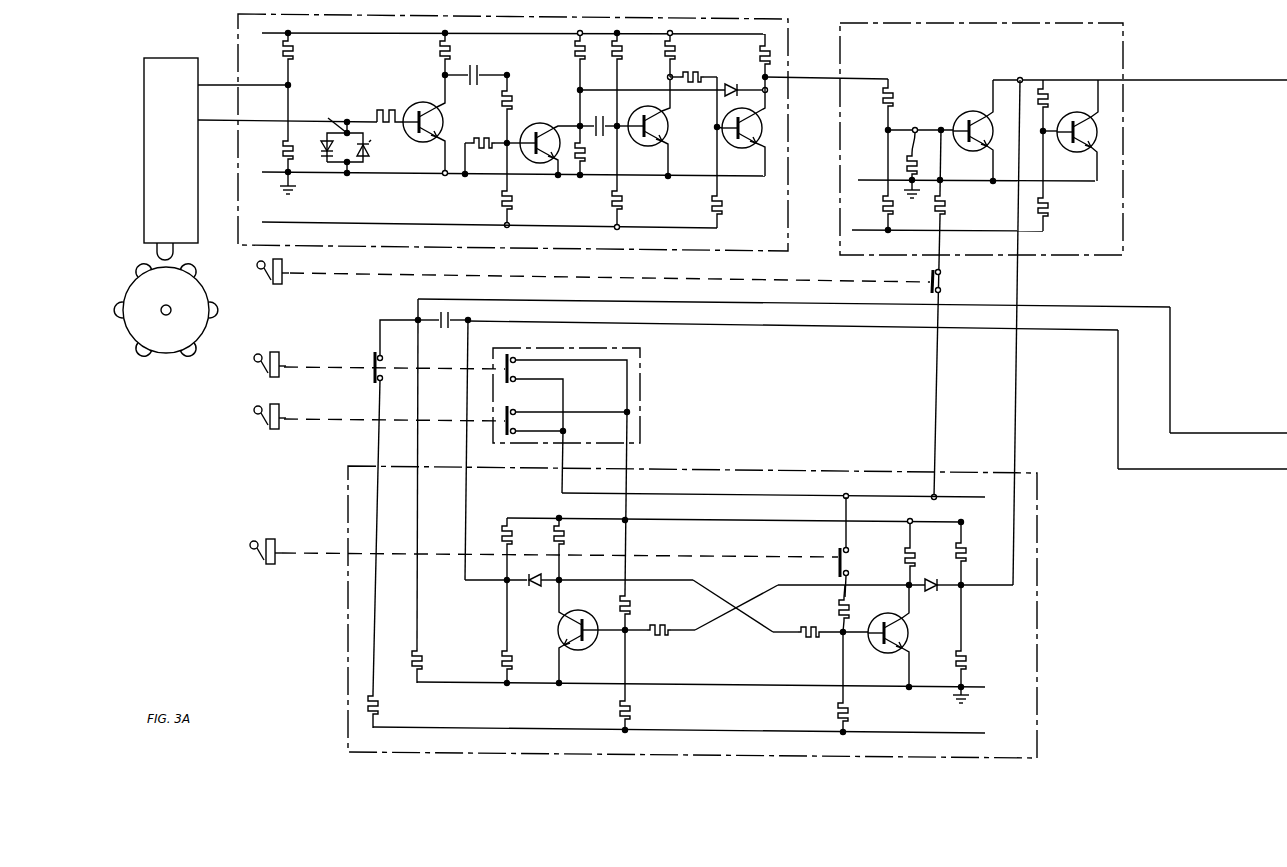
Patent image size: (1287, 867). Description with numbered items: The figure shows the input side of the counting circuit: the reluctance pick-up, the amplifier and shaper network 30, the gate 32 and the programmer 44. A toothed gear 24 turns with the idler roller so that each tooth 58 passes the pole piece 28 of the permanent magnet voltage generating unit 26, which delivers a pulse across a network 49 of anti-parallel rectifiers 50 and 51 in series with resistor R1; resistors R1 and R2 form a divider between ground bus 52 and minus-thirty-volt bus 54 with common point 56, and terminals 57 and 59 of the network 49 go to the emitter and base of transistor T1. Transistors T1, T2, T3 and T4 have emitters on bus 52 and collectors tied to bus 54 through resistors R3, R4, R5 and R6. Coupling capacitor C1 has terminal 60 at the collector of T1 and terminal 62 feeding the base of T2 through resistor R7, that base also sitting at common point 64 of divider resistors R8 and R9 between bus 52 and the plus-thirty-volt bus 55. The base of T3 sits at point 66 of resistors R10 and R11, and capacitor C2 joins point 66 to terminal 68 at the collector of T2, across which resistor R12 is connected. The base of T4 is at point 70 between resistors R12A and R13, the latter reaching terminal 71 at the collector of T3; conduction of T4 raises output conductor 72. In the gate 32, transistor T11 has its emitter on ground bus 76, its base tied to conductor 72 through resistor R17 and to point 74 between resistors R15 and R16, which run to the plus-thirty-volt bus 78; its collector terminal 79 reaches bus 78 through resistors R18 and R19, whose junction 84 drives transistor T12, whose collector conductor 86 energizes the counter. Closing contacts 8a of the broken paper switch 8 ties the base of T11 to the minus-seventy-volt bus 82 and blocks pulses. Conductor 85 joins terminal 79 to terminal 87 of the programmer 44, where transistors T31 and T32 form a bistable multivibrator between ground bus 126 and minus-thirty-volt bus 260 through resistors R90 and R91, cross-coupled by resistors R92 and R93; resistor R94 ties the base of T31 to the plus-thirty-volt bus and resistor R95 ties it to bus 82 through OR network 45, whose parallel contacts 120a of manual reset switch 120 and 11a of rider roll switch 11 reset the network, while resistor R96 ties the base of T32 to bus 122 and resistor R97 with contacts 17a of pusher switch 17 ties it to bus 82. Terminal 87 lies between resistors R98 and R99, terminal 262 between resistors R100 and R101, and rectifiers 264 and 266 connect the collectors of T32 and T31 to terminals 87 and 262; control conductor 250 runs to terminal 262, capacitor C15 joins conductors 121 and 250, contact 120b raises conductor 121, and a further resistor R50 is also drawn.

The amplifier and shaper network 30 is at (238, 20).
The permanent magnet voltage generating unit 26 is at (144, 192).
The pick-up pole piece 28 is at (157, 249).
The toothed gear 24 is at (160, 353).
The tooth 58 is at (213, 313).
The minus thirty volt bus 54 is at (345, 33).
The plus thirty volt bus 55 is at (312, 223).
The common point 56 is at (292, 86).
The network terminal 57 is at (345, 163).
The network terminal 59 is at (287, 119).
The rectifier 50 is at (321, 144).
The rectifier 51 is at (366, 143).
The network 49 is at (357, 154).
The ground potential bus 52 is at (396, 177).
The capacitor terminal 60 is at (443, 75).
The capacitor terminal 62 is at (497, 75).
The common point 64 is at (504, 140).
The common point 66 is at (618, 132).
The terminal 68 is at (578, 126).
The common point 70 is at (714, 131).
The terminal 71 is at (666, 78).
The output conductor 72 is at (823, 76).
The gate 32 is at (1123, 40).
The common point 74 is at (885, 130).
The ground potential bus 76 is at (958, 182).
The plus thirty volt bus 78 is at (993, 230).
The terminal 79 is at (1020, 77).
The terminal 84 is at (1043, 133).
The conductor 85 is at (1016, 243).
The conductor 86 is at (1195, 80).
The broken paper switch 8 is at (262, 273).
The contacts 8a is at (941, 287).
The manual reset switch 120 is at (256, 364).
The contacts 120a is at (514, 362).
The contact 120b is at (374, 352).
The rider roll switch 11 is at (256, 417).
The contacts 11a is at (515, 415).
The conductor 121 is at (573, 302).
The control conductor 250 is at (767, 331).
The OR network 45 is at (640, 350).
The programmer 44 is at (721, 471).
The minus seventy volt bus 82 is at (711, 498).
The minus thirty volt bus 260 is at (710, 522).
The pusher switch 17 is at (257, 558).
The contacts 17a is at (842, 548).
The terminal 262 is at (503, 584).
The rectifier 266 is at (522, 583).
The rectifier 264 is at (947, 579).
The terminal 87 is at (964, 588).
The ground bus 126 is at (699, 685).
The plus thirty volt bus 122 is at (666, 732).
The resistor R1 is at (284, 142).
The resistor R2 is at (294, 47).
The resistor R3 is at (440, 48).
The resistor R4 is at (574, 51).
The resistor R5 is at (674, 50).
The resistor R6 is at (759, 50).
The current limiting resistor R7 is at (511, 98).
The voltage dividing resistor R8 is at (492, 157).
The voltage dividing resistor R9 is at (512, 202).
The resistor R10 is at (622, 51).
The resistor R11 is at (623, 198).
The resistor R12 is at (583, 154).
The resistor R12A is at (719, 204).
The resistor R13 is at (696, 71).
The resistor R15 is at (912, 129).
The resistor R16 is at (901, 181).
The resistor R17 is at (899, 93).
The resistor R18 is at (1050, 94).
The resistor R19 is at (1051, 205).
The resistor R50 is at (380, 704).
The resistor R90 is at (566, 531).
The resistor R91 is at (905, 551).
The resistor R92 is at (650, 640).
The resistor R93 is at (807, 644).
The resistor R94 is at (620, 710).
The resistor R95 is at (632, 602).
The resistor R96 is at (836, 710).
The resistor R97 is at (838, 608).
The resistor R98 is at (968, 660).
The resistor R99 is at (966, 559).
The resistor R100 is at (501, 657).
The resistor R101 is at (502, 530).
The coupling capacitor C1 is at (472, 66).
The coupling capacitor C2 is at (604, 115).
The capacitor C15 is at (440, 330).
The transistor T1 is at (419, 125).
The transistor T2 is at (514, 133).
The transistor T3 is at (652, 128).
The transistor T4 is at (739, 130).
The transistor T11 is at (966, 112).
The transistor T12 is at (1071, 113).
The transistor T31 is at (558, 632).
The transistor T32 is at (910, 633).